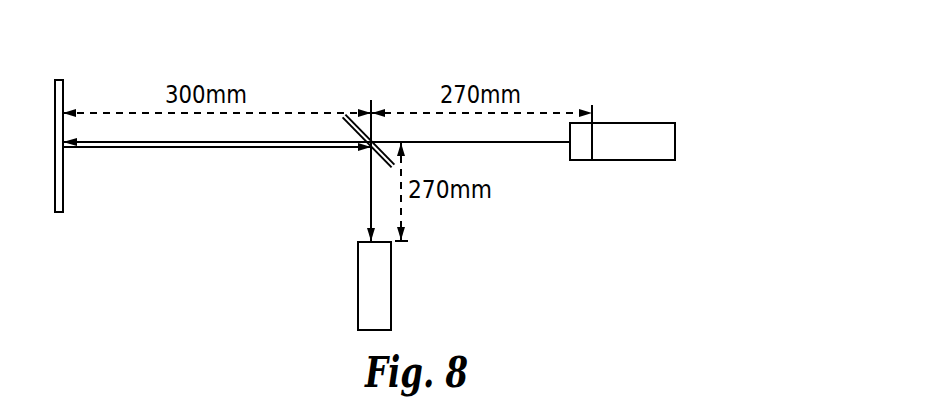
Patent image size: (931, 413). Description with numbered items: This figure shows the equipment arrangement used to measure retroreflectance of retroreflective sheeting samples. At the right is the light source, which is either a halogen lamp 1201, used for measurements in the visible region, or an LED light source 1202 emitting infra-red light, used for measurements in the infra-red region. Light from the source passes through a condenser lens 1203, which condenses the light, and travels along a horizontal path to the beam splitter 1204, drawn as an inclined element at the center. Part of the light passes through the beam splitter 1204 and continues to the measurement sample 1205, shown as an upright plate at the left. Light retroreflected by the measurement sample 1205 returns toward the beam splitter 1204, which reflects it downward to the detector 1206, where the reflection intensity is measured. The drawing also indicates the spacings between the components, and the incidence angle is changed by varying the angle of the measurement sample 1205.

The halogen lamp 1201 is at (691, 141).
The LED light source 1202 is at (667, 143).
The condenser lens 1203 is at (582, 150).
The beam splitter 1204 is at (343, 114).
The measurement sample 1205 is at (63, 193).
The detector 1206 is at (380, 292).